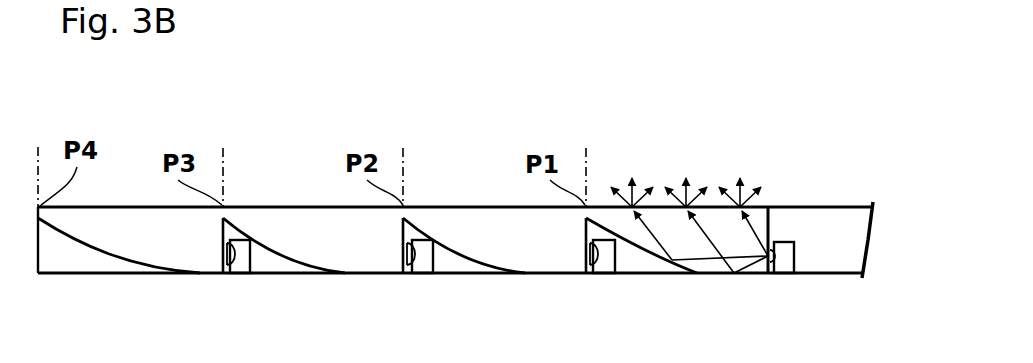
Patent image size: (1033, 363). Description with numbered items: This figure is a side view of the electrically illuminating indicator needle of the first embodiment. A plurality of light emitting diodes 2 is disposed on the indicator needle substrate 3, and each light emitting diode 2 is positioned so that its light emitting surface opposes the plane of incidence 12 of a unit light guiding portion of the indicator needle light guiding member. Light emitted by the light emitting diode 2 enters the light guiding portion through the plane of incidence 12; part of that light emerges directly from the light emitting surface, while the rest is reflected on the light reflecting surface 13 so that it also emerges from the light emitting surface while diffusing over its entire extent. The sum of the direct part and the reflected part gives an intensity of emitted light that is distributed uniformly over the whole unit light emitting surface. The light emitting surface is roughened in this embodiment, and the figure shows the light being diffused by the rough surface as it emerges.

The light emitting diode 2 is at (240, 265).
The indicator needle substrate 3 is at (822, 218).
The plane of incidence 12 is at (222, 264).
The light reflecting surface 13 is at (108, 258).